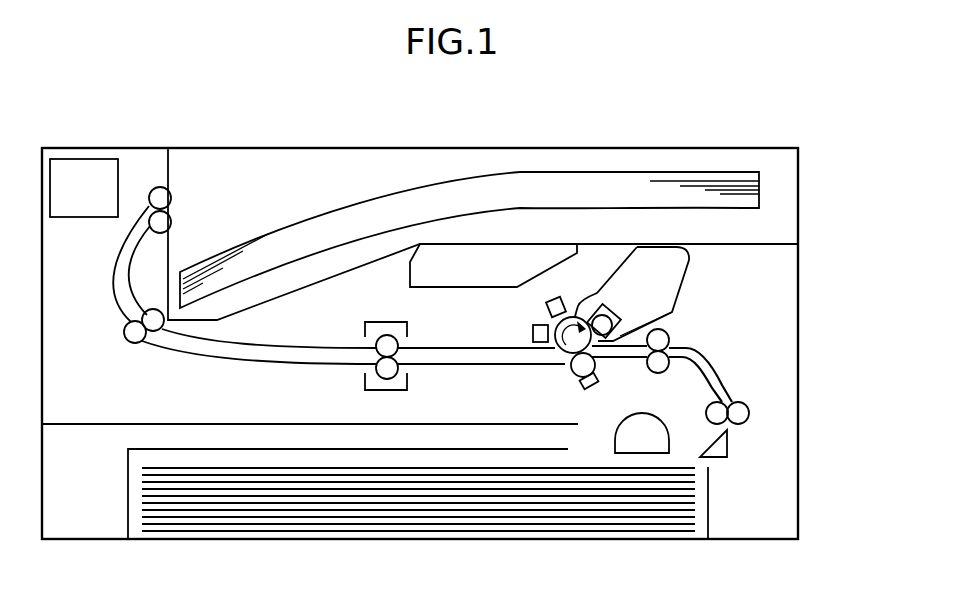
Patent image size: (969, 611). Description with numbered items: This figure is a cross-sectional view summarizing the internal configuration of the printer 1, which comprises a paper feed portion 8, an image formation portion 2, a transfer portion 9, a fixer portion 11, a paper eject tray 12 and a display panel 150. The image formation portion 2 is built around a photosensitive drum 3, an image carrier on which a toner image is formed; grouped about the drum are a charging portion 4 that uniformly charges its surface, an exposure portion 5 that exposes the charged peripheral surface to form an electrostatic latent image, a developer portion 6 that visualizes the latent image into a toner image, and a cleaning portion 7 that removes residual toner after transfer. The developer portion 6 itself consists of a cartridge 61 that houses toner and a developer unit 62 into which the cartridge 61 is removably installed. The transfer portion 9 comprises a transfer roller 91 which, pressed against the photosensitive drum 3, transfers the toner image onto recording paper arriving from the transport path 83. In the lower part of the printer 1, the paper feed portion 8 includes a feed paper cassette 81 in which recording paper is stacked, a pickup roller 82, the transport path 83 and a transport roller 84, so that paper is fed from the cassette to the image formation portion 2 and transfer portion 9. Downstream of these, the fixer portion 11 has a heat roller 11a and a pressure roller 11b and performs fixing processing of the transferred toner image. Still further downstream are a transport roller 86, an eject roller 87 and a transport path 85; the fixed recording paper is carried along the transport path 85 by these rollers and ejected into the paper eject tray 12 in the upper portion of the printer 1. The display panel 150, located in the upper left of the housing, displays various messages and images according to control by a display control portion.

The printer 1 is at (810, 178).
The image formation portion 2 is at (592, 262).
The photosensitive drum 3 is at (570, 348).
The charging portion 4 is at (545, 302).
The exposure portion 5 is at (452, 262).
The developer portion 6 is at (659, 295).
The cartridge 61 is at (668, 268).
The developer unit 62 is at (616, 311).
The cleaning portion 7 is at (530, 333).
The paper feed portion 8 is at (461, 506).
The feed paper cassette 81 is at (127, 490).
The pickup roller 82 is at (642, 440).
The transport path 83 is at (710, 375).
The transport roller 84 is at (729, 376).
The transport path 85 is at (225, 358).
The transport roller 86 is at (134, 338).
The eject roller 87 is at (157, 192).
The transfer portion 9 is at (574, 392).
The transfer roller 91 is at (582, 367).
The fixer portion 11 is at (348, 459).
The heat roller 11a is at (376, 341).
The pressure roller 11b is at (388, 379).
The paper eject tray 12 is at (334, 260).
The display panel 150 is at (68, 158).